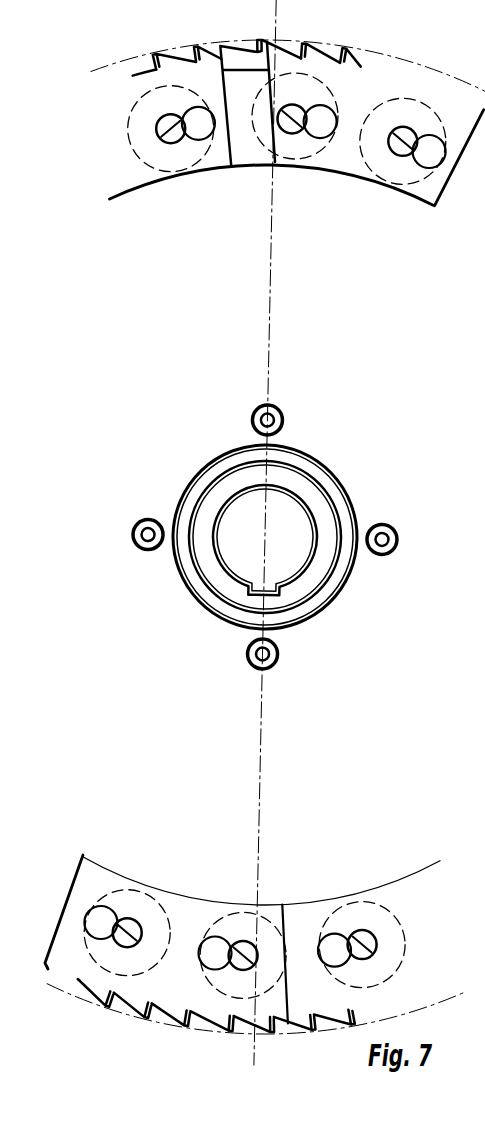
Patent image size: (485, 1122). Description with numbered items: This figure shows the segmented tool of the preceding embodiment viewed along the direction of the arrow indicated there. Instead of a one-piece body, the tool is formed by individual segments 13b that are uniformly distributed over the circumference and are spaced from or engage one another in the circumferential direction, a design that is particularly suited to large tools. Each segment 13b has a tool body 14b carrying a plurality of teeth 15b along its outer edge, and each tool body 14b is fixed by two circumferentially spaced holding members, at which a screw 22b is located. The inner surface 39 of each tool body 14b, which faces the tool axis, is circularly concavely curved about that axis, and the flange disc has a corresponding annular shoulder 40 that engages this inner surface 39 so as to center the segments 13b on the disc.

The tool segment 13b is at (252, 52).
The tooth 15b is at (342, 57).
The fastening screw 22b is at (398, 128).
The inner surface 39 is at (297, 167).
The tool body 14b is at (343, 167).
The annular shoulder 40 is at (453, 217).